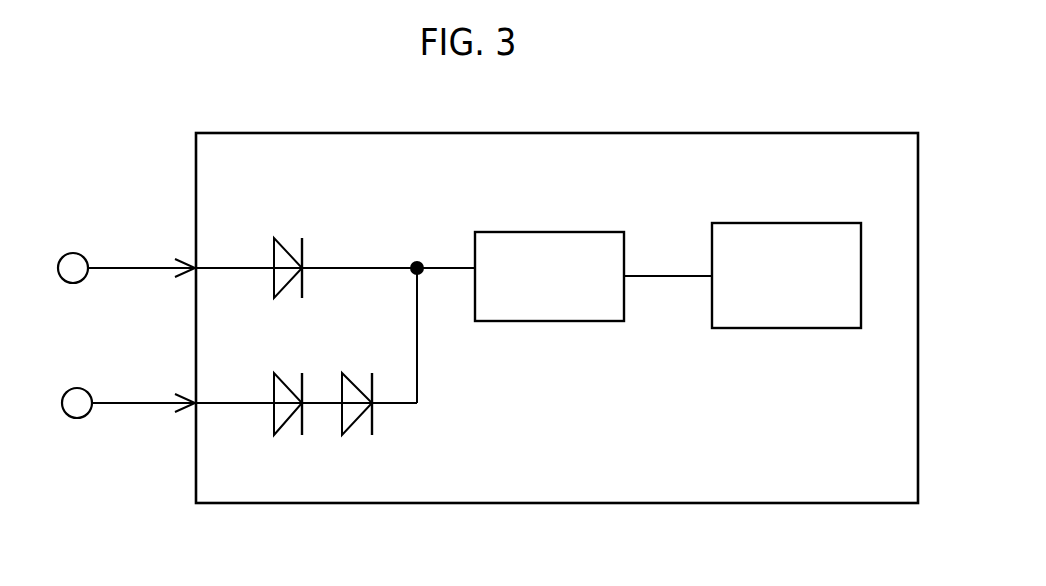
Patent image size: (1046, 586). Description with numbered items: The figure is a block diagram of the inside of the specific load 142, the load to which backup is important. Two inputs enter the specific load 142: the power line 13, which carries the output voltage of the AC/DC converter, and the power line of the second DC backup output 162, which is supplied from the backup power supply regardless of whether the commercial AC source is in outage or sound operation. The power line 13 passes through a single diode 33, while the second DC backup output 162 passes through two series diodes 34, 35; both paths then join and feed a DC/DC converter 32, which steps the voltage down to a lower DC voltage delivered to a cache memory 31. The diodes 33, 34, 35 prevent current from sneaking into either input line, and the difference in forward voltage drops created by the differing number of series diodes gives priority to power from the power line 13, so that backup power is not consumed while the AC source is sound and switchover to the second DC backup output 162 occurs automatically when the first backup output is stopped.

The specific load 142 is at (812, 133).
The power line 13 is at (140, 268).
The second DC backup output 162 is at (140, 402).
The diode 33 is at (282, 242).
The diode 34 is at (282, 378).
The diode 35 is at (352, 378).
The DC/DC converter 32 is at (540, 231).
The cache memory 31 is at (773, 222).